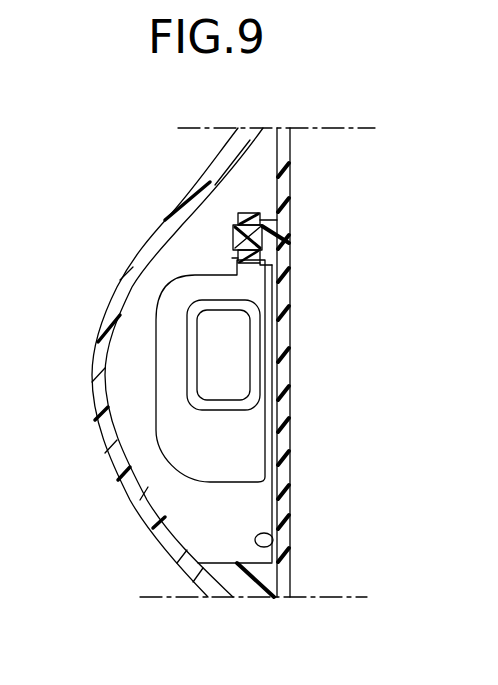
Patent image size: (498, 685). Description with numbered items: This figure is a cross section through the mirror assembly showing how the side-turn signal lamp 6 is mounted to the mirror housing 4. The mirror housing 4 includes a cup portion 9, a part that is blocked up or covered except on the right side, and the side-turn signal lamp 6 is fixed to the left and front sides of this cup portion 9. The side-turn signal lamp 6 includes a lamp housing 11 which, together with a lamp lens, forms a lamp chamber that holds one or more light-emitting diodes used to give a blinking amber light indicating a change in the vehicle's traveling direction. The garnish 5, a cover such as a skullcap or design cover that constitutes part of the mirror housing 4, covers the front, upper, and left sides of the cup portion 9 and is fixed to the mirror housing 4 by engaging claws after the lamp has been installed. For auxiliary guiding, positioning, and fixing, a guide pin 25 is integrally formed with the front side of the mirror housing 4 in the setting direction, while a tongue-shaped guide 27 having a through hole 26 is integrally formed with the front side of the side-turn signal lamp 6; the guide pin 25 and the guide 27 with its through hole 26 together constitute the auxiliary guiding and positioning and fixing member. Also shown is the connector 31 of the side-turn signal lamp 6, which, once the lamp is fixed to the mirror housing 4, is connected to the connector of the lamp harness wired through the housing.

The mirror housing 4 is at (292, 505).
The garnish 5 is at (112, 470).
The side-turn signal lamp 6 is at (142, 368).
The cup portion 9 is at (272, 550).
The lamp housing 11 is at (152, 413).
The guide pin 25 is at (232, 241).
The through hole 26 is at (233, 233).
The guide 27 is at (250, 213).
The connector 31 is at (185, 322).